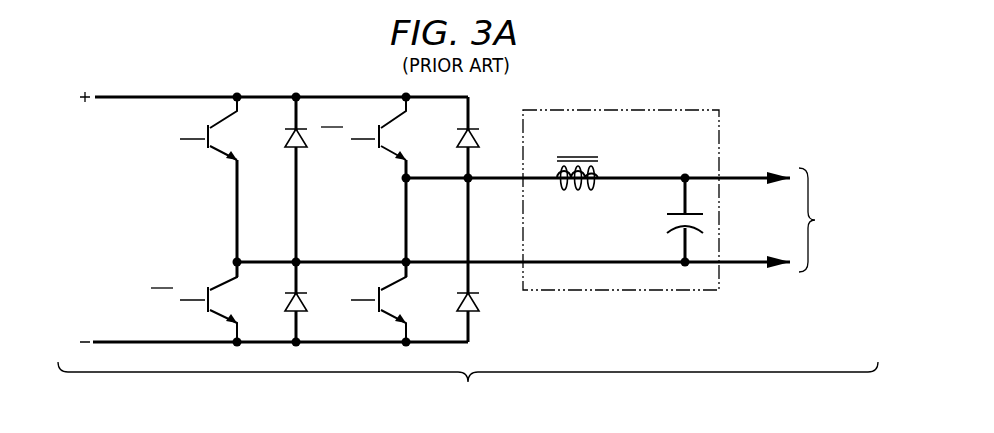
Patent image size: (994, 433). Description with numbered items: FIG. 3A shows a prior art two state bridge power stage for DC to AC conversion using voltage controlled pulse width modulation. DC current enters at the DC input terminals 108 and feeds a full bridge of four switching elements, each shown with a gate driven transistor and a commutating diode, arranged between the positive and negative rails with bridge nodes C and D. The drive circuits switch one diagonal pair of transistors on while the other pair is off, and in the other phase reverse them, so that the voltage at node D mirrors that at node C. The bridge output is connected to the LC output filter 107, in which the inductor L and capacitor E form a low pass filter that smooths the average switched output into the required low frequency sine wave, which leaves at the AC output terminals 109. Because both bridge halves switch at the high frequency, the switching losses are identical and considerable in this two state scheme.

The LC output filter 107 is at (620, 108).
The DC input terminals 108 is at (99, 256).
The AC output terminals 109 is at (841, 258).